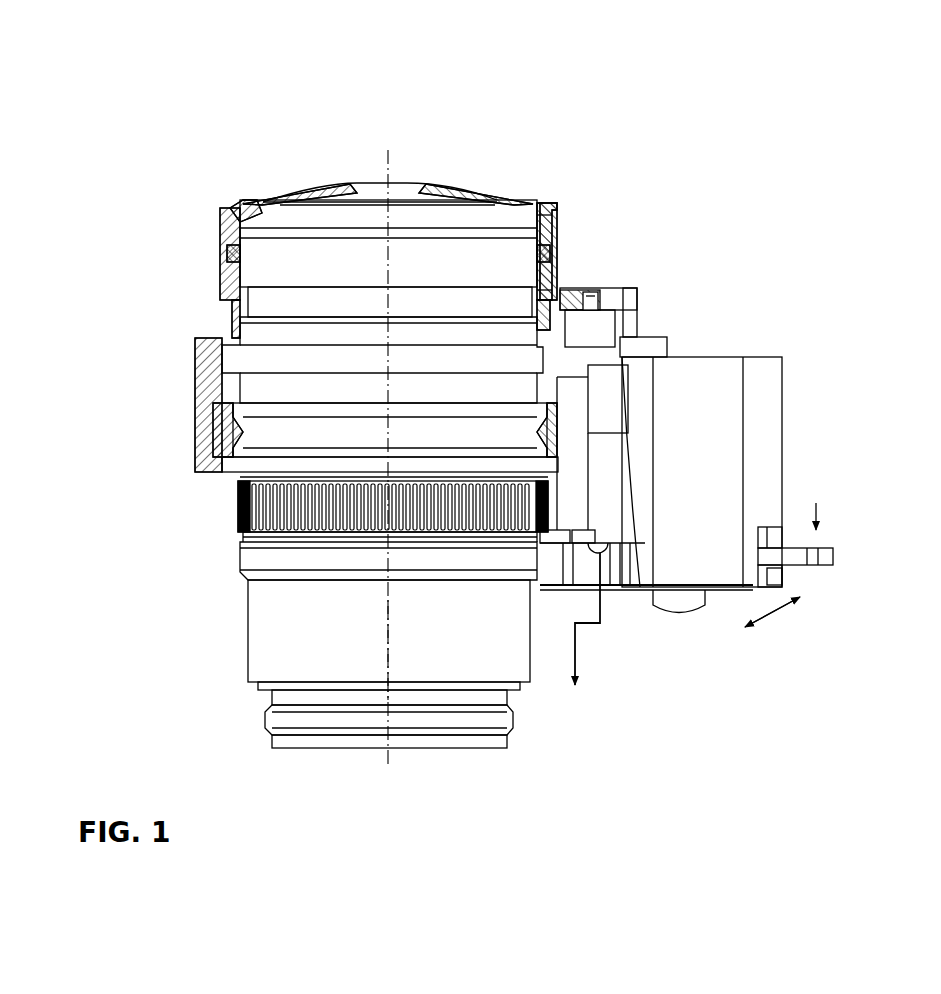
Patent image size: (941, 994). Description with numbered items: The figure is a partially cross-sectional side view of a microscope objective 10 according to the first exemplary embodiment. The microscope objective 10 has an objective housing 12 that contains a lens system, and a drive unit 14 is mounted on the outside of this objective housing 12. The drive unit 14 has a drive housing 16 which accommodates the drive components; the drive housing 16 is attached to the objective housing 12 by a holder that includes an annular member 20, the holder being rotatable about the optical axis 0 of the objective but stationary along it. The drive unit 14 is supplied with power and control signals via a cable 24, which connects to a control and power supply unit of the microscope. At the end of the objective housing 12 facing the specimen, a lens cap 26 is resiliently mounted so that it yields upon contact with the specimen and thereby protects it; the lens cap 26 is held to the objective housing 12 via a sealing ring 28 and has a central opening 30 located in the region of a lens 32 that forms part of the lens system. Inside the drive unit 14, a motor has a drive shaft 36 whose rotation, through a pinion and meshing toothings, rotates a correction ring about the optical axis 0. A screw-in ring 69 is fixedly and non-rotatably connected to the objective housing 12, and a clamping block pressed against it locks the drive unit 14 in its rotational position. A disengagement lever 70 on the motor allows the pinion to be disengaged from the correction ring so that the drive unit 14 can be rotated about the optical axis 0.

The microscope objective 10 is at (678, 106).
The objective housing 12 is at (248, 625).
The drive unit 14 is at (727, 213).
The drive housing 16 is at (768, 350).
The annular member 20 is at (214, 452).
The cable 24 is at (575, 662).
The lens cap 26 is at (228, 222).
The sealing ring 28 is at (552, 255).
The central opening 30 is at (412, 184).
The lens 32 is at (375, 191).
The drive shaft 36 is at (594, 297).
The screw-in ring 69 is at (250, 507).
The disengagement lever 70 is at (825, 552).
The optical axis 0 is at (388, 662).